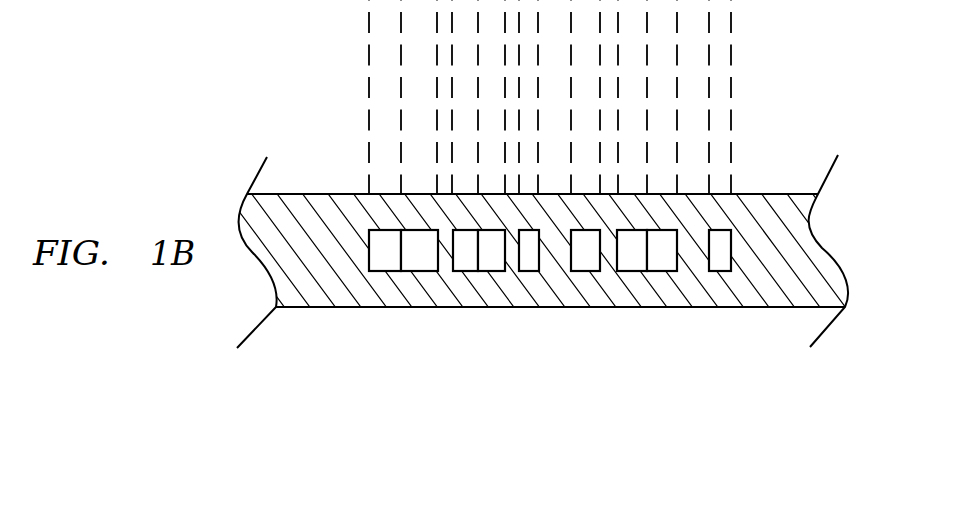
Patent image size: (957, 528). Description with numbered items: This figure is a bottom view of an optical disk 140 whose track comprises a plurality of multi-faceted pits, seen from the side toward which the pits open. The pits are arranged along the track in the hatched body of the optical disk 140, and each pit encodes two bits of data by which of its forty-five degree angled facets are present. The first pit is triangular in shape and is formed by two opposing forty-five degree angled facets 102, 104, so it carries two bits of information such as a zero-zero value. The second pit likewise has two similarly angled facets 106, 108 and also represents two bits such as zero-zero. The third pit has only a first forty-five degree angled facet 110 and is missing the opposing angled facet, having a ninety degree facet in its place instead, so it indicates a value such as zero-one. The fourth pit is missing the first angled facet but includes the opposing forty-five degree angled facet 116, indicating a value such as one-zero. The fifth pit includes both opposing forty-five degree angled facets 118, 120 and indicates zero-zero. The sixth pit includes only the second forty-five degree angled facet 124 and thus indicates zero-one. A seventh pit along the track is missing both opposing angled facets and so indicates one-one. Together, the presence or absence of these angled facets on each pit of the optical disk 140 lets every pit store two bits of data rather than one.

The 45° angled facet 102 is at (385, 258).
The 45° angled facet 104 is at (419, 258).
The angled facet 106 is at (465, 258).
The angled facet 108 is at (492, 258).
The first 45° angled facet 110 is at (528, 258).
The opposing 45° angled facet 116 is at (587, 258).
The 45° angled facet 118 is at (633, 258).
The 45° angled facet 120 is at (663, 258).
The second 45° angled facet 124 is at (720, 258).
The optical disk 140 is at (778, 252).